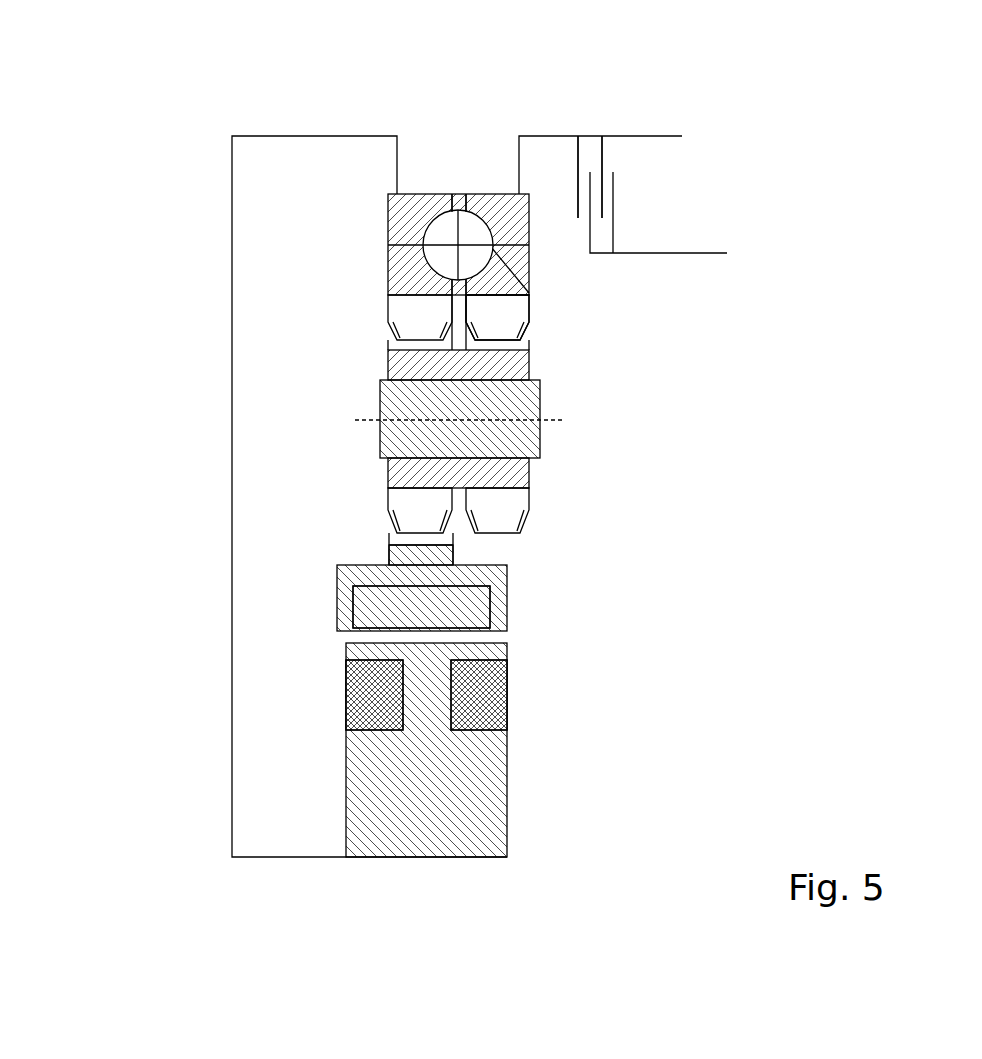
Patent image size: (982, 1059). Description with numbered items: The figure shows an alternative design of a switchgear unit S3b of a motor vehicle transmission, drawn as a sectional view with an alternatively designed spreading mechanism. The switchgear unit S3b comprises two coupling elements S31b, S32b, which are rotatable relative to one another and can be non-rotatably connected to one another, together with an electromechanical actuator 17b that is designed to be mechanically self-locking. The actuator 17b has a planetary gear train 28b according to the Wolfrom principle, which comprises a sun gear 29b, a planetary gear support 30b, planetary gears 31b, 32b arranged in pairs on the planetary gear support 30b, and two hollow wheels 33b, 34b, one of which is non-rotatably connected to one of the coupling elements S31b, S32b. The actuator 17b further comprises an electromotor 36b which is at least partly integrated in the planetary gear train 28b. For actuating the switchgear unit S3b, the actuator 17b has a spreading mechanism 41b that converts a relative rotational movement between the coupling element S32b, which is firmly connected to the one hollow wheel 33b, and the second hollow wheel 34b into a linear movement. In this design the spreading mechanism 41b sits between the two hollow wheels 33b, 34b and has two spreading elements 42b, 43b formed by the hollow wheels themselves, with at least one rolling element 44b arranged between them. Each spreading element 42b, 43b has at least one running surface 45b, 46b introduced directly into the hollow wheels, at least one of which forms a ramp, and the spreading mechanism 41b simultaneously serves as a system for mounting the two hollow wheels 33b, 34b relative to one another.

The electromechanical actuator 17b is at (180, 137).
The planetary gear train 28b is at (338, 418).
The sun gear 29b is at (405, 563).
The planetary gear support 30b is at (543, 448).
The planetary gear 31b is at (387, 497).
The planetary gear 32b is at (528, 527).
The hollow wheel 33b is at (387, 318).
The second hollow wheel 34b is at (532, 318).
The electromotor 36b is at (318, 664).
The spreading mechanism 41b is at (447, 180).
The spreading element 42b is at (387, 232).
The spreading element 43b is at (513, 243).
The rolling element 44b is at (503, 312).
The running surface 45b is at (433, 194).
The running surface 46b is at (478, 222).
The switchgear unit S3b is at (658, 90).
The coupling element S31b is at (693, 250).
The coupling element S32b is at (588, 134).